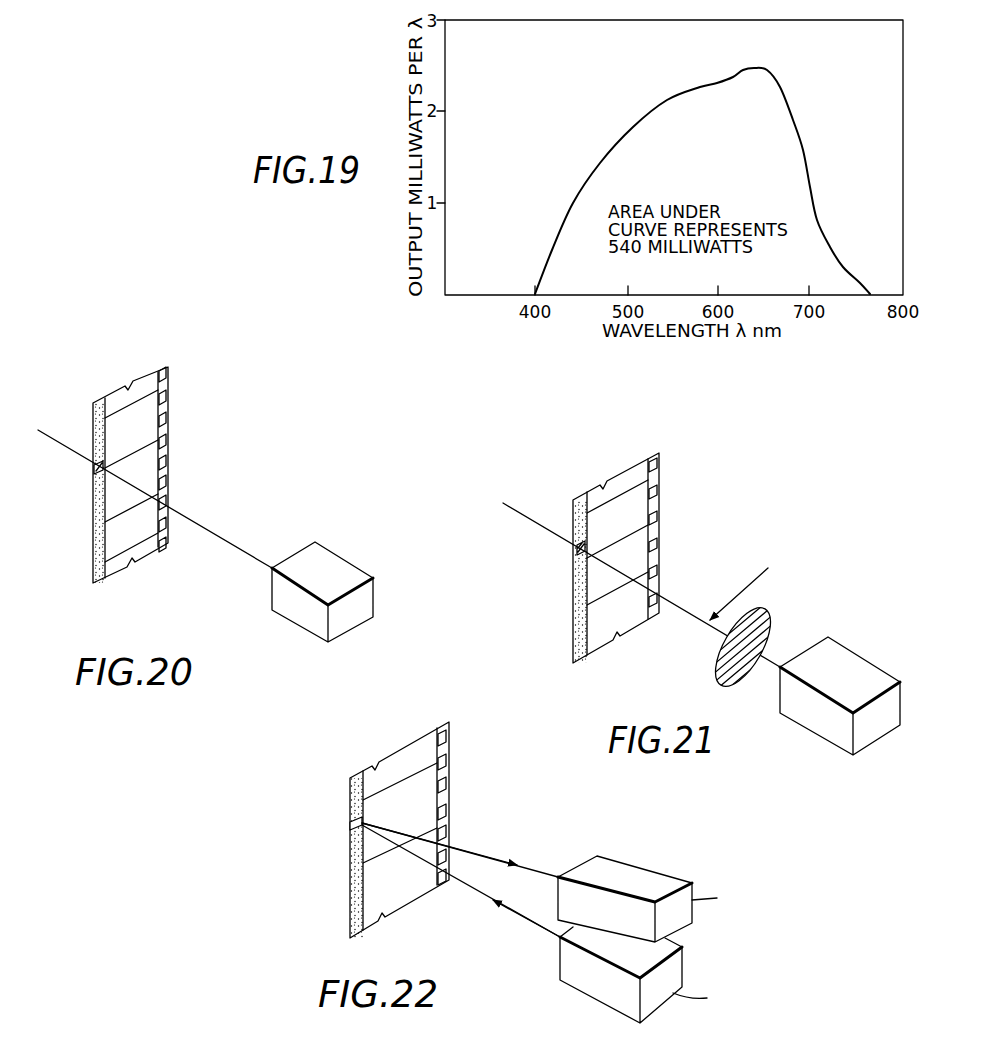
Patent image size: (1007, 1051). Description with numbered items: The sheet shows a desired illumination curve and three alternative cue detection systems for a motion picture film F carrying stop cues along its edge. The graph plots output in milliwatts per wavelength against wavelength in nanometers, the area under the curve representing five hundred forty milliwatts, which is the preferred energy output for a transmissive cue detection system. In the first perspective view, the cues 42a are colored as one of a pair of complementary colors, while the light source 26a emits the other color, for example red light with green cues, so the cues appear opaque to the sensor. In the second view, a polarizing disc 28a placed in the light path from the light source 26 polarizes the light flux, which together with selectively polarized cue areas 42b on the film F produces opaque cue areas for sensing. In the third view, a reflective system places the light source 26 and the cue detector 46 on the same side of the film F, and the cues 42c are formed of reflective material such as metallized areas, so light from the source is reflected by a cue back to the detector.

In FIG. 20, the film F is at (128, 390).
In FIG. 21, the film F is at (602, 487).
In FIG. 22, the film F is at (383, 765).
In FIG. 20, the cues 42a is at (95, 463).
In FIG. 20, the light source 26a is at (293, 612).
In FIG. 21, the cue areas 42b is at (575, 548).
In FIG. 21, the polarizing disc 28a is at (717, 675).
In FIG. 21, the light source 26 is at (825, 733).
In FIG. 22, the light source 26 is at (592, 987).
In FIG. 22, the cues 42c is at (350, 825).
In FIG. 22, the cue detector 46 is at (635, 872).